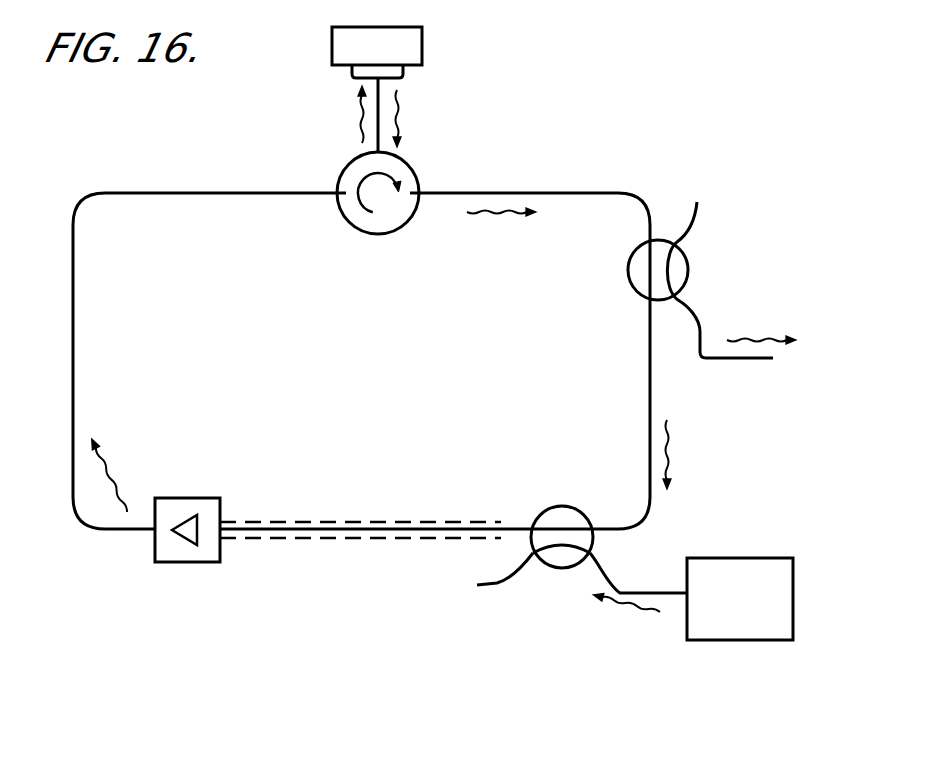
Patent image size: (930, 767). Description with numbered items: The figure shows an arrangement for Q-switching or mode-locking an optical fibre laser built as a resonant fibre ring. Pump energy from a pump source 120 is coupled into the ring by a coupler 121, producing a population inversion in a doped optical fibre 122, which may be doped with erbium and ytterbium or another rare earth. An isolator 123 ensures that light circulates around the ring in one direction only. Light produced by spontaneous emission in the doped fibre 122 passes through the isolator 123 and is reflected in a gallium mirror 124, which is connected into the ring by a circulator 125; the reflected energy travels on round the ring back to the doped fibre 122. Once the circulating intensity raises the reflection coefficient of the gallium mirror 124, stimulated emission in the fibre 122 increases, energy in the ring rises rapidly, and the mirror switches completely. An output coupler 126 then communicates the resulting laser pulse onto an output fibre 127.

The pump source 120 is at (730, 558).
The coupler 121 is at (555, 508).
The doped optical fibre 122 is at (330, 522).
The isolator 123 is at (185, 562).
The gallium mirror 124 is at (402, 78).
The circulator 125 is at (407, 165).
The output coupler 126 is at (688, 262).
The output fibre 127 is at (730, 358).